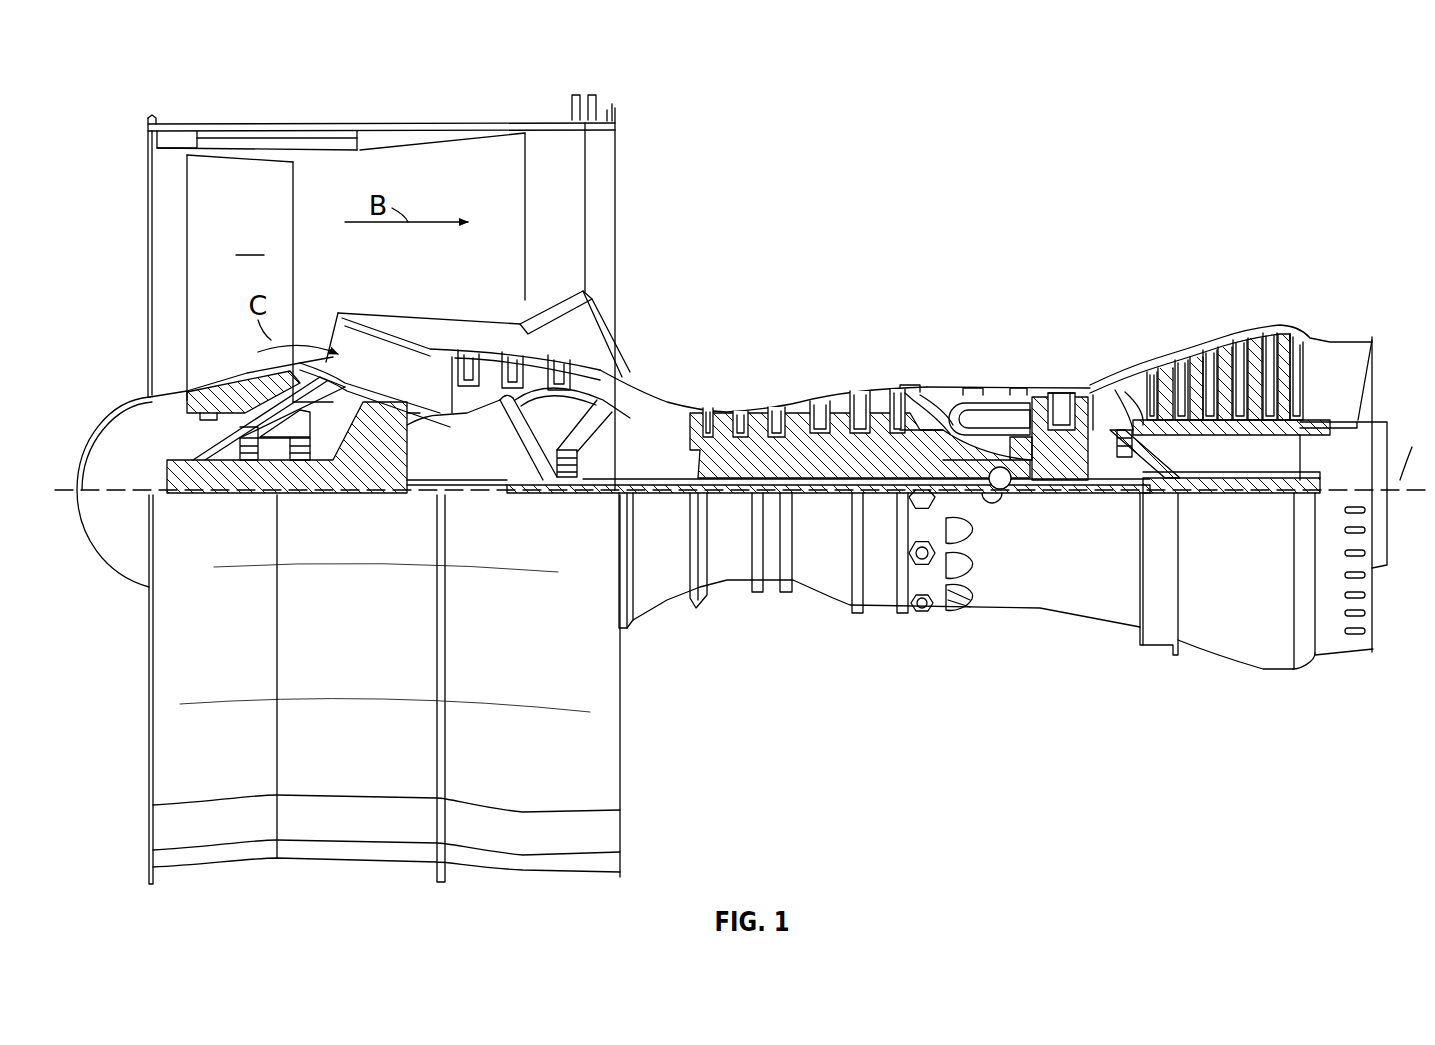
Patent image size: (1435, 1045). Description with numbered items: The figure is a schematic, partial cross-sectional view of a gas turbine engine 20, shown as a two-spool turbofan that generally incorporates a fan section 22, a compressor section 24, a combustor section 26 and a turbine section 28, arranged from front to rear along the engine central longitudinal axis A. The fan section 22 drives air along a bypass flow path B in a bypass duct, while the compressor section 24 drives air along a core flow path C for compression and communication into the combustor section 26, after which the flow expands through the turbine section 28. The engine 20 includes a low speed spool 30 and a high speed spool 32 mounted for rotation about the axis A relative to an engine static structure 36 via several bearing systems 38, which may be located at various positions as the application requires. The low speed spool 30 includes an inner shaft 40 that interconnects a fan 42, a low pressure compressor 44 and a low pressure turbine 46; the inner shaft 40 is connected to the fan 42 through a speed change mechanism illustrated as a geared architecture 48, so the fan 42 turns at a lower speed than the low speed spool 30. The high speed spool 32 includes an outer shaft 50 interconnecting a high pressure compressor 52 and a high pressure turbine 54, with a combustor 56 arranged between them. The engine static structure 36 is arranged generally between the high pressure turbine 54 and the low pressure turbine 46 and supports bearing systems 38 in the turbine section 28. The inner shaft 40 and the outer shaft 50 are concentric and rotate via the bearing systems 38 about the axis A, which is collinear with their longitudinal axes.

The gas turbine engine 20 is at (1197, 159).
The fan section 22 is at (258, 116).
The compressor section 24 is at (813, 347).
The combustor section 26 is at (976, 347).
The turbine section 28 is at (1126, 333).
The low speed spool 30 is at (843, 498).
The high speed spool 32 is at (905, 417).
The engine static structure 36 is at (880, 614).
The bearing systems 38 is at (250, 457).
The inner shaft 40 is at (636, 493).
The fan 42 is at (384, 519).
The low pressure compressor 44 is at (535, 372).
The low pressure turbine 46 is at (1228, 350).
The geared architecture 48 is at (385, 462).
The outer shaft 50 is at (1003, 490).
The high pressure compressor 52 is at (793, 447).
The high pressure turbine 54 is at (1063, 390).
The combustor 56 is at (985, 410).